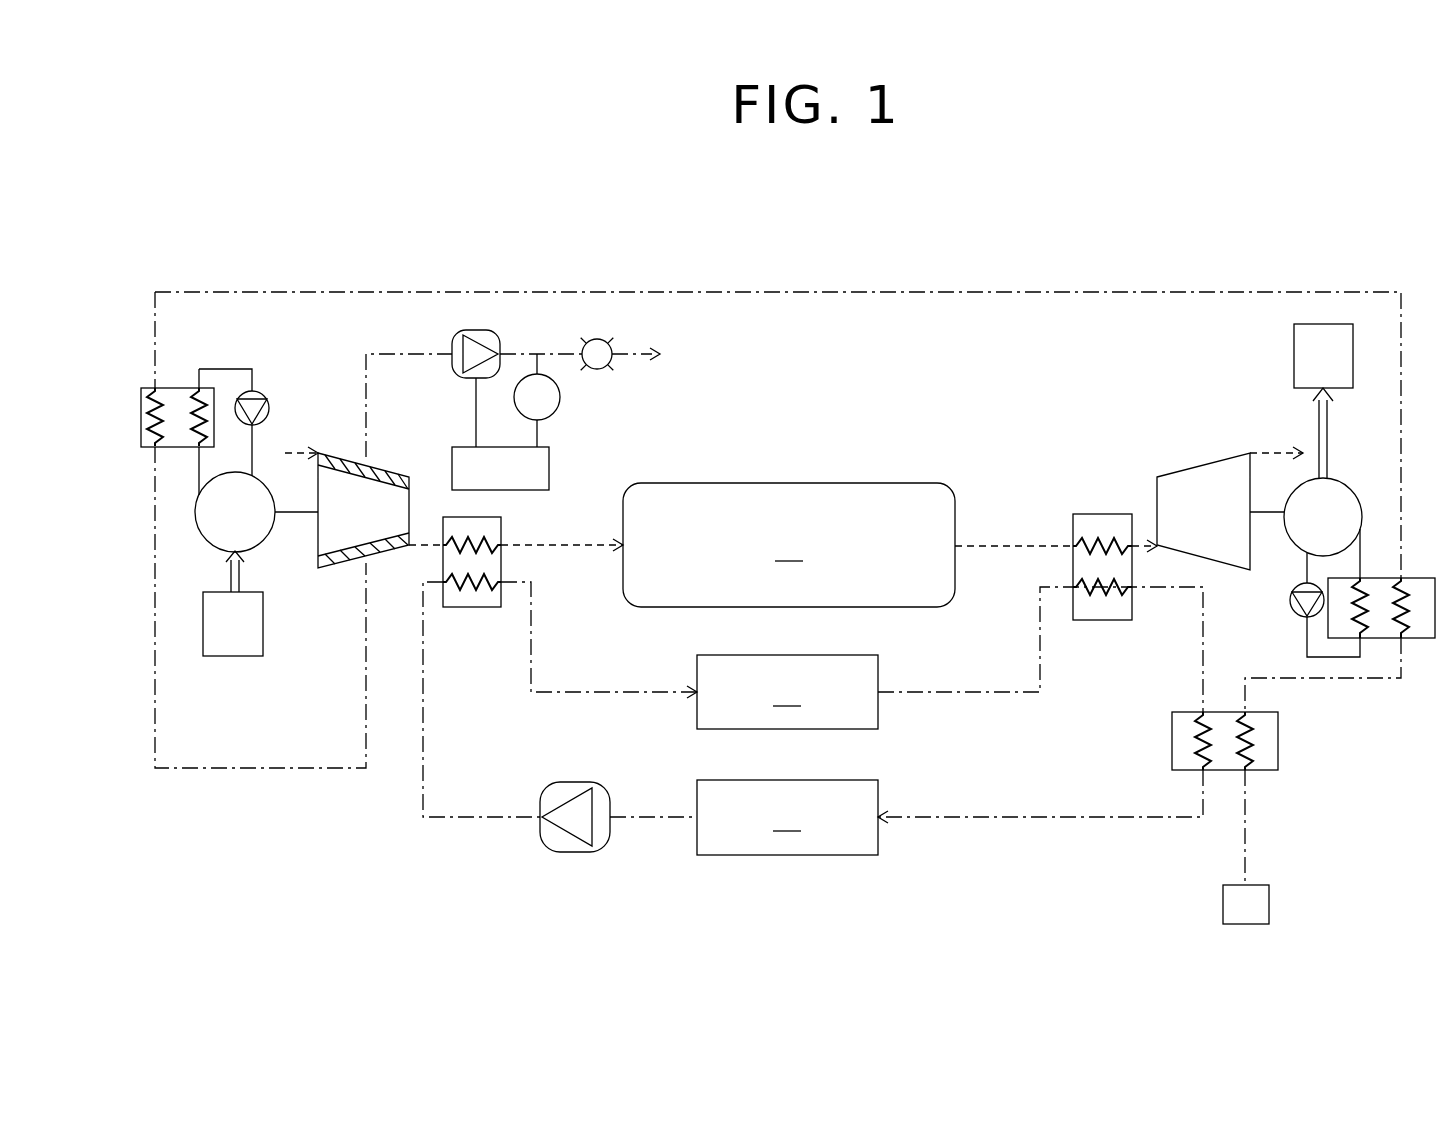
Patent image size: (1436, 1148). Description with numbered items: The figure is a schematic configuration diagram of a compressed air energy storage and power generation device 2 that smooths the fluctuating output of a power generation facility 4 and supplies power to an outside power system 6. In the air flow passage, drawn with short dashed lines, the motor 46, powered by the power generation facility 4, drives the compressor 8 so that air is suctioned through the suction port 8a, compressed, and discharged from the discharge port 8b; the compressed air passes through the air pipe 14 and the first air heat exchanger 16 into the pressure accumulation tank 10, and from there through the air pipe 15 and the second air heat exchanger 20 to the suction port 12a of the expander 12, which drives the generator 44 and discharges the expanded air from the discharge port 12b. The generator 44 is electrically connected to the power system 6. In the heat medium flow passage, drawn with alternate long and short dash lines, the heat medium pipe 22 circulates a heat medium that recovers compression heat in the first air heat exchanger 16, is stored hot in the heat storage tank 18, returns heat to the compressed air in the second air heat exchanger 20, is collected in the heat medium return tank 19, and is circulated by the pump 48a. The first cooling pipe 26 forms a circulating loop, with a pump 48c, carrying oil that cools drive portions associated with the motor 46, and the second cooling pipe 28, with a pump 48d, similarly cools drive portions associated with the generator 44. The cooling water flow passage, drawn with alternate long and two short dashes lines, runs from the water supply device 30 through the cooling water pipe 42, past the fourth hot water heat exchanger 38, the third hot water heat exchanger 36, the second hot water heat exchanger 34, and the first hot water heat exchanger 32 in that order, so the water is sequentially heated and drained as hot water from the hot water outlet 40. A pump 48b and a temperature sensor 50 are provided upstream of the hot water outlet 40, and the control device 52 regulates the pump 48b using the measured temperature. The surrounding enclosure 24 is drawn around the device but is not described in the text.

The compressed air energy storage and power generation device 2 is at (778, 546).
The power generation facility 4 is at (263, 622).
The outside power system 6 is at (1294, 333).
The compressor 8 is at (365, 501).
The suction port 8a is at (322, 452).
The discharge port 8b is at (405, 560).
The pressure accumulation tank 10 is at (789, 545).
The expander 12 is at (1201, 474).
The suction port 12a is at (1157, 545).
The discharge port 12b is at (1255, 452).
The air pipe 14 is at (600, 540).
The air pipe 15 is at (1012, 540).
The first air heat exchanger 16 is at (472, 607).
The heat storage tank 18 is at (689, 655).
The heat medium return tank 19 is at (787, 817).
The second air heat exchanger 20 is at (1100, 620).
The heat medium pipe 22 is at (972, 692).
The cooling medium line 24 is at (335, 293).
The first cooling pipe 26 is at (240, 369).
The second cooling pipe 28 is at (1307, 655).
The water supply device 30 is at (1265, 893).
The first hot water heat exchanger 32 is at (400, 478).
The second hot water heat exchanger 34 is at (180, 447).
The third hot water heat exchanger 36 is at (1420, 640).
The fourth hot water heat exchanger 38 is at (1278, 740).
The hot water outlet 40 is at (608, 343).
The cooling water pipe 42 is at (760, 293).
The generator 44 is at (1347, 490).
The motor 46 is at (208, 541).
The pump 48a is at (575, 852).
The pump 48b is at (465, 338).
The pump 48c is at (268, 397).
The pump 48d is at (1290, 612).
The temperature sensor 50 is at (560, 405).
The control device 52 is at (510, 490).